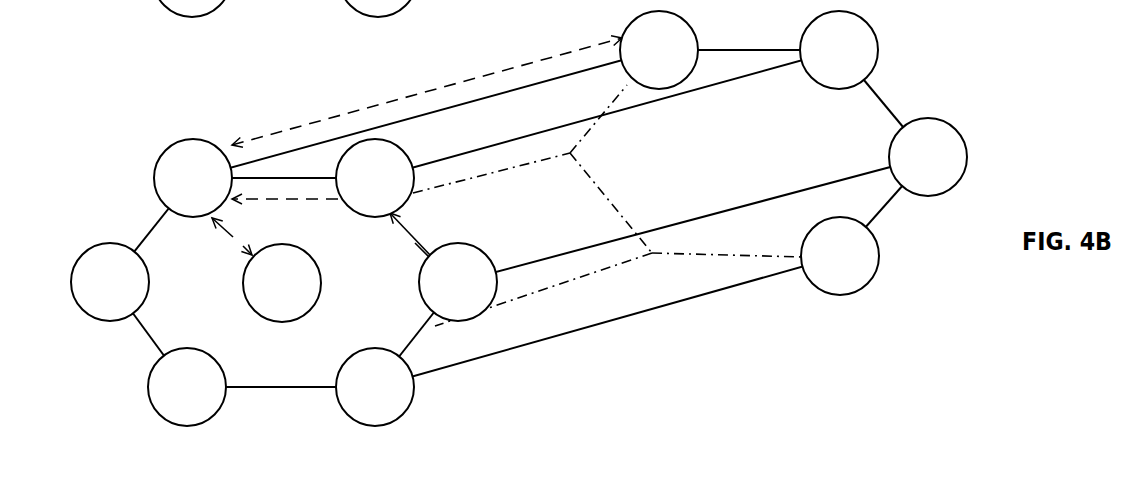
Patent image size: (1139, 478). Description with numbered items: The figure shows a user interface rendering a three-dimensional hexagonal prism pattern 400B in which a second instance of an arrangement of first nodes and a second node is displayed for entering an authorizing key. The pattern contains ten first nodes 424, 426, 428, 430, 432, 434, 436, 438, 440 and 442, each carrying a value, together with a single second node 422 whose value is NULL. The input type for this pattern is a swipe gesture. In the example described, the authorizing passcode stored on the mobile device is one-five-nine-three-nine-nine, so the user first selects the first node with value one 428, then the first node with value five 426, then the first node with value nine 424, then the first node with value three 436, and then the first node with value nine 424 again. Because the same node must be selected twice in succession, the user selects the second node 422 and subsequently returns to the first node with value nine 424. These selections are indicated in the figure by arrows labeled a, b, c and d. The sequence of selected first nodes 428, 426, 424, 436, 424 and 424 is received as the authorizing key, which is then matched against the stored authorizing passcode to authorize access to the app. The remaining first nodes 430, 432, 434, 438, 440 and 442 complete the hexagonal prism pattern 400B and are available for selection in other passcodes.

The hexagonal prism pattern 400B is at (204, 100).
The second node 422 is at (264, 308).
The first node with value '9' 424 is at (175, 203).
The first node with value '5' 426 is at (357, 203).
The first node with value '1' 428 is at (440, 307).
The first node 430 is at (357, 412).
The first node 432 is at (169, 412).
The first node 434 is at (92, 307).
The first node with value '3' 436 is at (641, 75).
The first node 438 is at (821, 75).
The first node 440 is at (910, 182).
The first node 442 is at (822, 281).